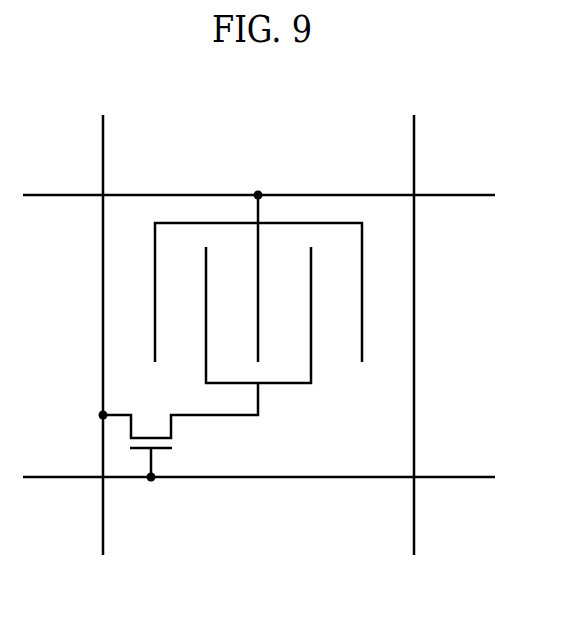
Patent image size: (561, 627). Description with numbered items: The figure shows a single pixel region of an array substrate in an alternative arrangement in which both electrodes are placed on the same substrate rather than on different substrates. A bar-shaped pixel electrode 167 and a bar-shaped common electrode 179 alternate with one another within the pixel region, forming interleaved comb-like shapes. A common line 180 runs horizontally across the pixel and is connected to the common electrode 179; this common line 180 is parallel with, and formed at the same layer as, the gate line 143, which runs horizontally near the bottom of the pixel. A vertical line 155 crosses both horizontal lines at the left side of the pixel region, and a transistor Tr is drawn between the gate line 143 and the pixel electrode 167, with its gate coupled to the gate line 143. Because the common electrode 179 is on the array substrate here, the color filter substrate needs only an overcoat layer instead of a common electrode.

The data line 155 is at (104, 147).
The common line 180 is at (40, 197).
The common electrode 179 is at (363, 259).
The pixel electrode 167 is at (312, 340).
The gate line 143 is at (40, 479).
The transistor Tr is at (173, 452).